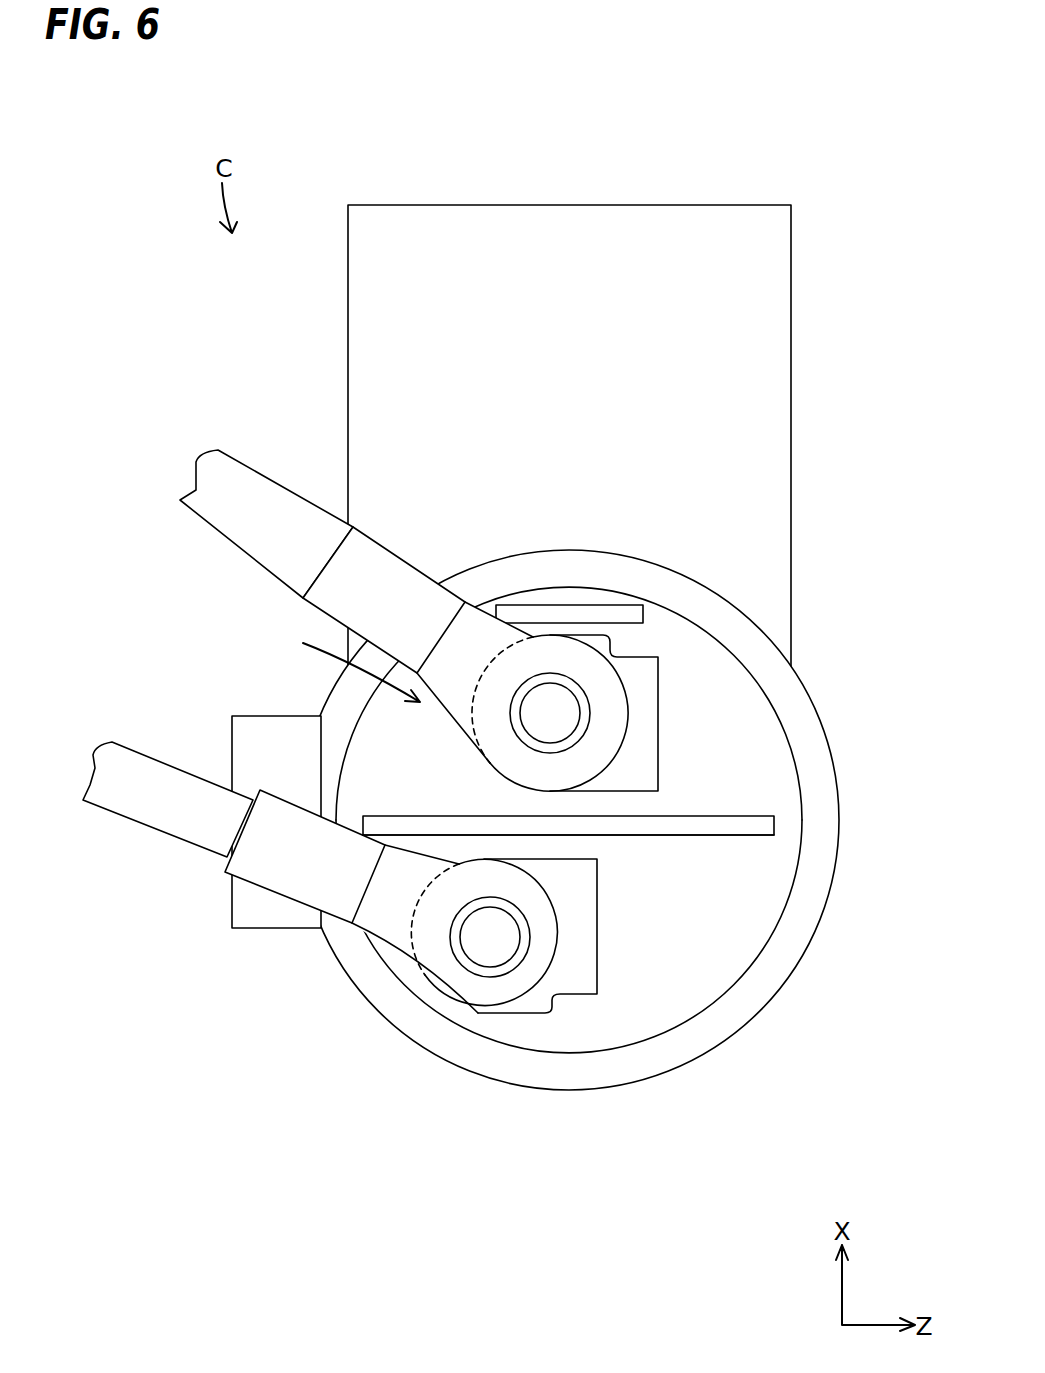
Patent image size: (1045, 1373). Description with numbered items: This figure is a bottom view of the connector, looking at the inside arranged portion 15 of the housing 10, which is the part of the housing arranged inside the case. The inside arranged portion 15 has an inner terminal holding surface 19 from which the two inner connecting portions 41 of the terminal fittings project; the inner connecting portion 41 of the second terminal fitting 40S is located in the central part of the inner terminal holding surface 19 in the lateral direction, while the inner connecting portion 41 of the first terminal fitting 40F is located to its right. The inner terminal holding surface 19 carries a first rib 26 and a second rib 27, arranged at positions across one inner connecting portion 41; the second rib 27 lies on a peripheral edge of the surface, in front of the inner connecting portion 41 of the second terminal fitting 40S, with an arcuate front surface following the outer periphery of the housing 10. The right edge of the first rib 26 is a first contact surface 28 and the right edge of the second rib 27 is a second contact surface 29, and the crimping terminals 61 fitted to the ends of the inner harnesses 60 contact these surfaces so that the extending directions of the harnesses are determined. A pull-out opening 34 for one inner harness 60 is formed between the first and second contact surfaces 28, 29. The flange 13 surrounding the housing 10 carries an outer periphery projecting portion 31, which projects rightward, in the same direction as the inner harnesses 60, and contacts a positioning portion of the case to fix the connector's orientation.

The housing 10 is at (561, 228).
The flange 13 is at (820, 870).
The inside arranged portion 15 is at (740, 763).
The inner terminal holding surface 19 is at (762, 923).
The first rib 26 is at (688, 836).
The second rib 27 is at (582, 605).
The first contact surface 28 is at (363, 826).
The second contact surface 29 is at (453, 608).
The outer periphery projecting portion 31 is at (243, 750).
The pull-out opening 34 is at (344, 660).
The second terminal fitting 40S is at (685, 873).
The first terminal fitting 40F is at (513, 1010).
The inner connecting portion 41 is at (638, 712).
The inner harness 60 is at (222, 512).
The crimping terminal 61 is at (505, 742).